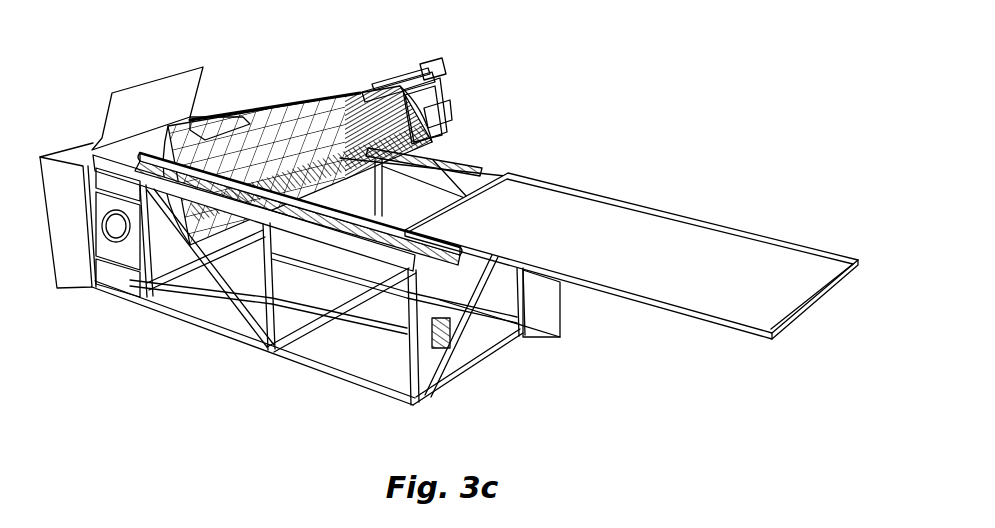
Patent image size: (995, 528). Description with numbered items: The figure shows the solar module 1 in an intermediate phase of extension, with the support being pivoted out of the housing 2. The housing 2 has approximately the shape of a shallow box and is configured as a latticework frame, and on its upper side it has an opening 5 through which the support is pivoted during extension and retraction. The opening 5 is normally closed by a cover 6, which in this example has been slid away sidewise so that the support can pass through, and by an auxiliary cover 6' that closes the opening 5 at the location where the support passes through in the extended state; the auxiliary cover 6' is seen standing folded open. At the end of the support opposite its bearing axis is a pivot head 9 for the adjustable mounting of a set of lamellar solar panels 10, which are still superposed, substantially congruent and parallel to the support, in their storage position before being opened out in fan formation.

The solar module 1 is at (196, 359).
The housing 2 is at (162, 308).
The opening 5 is at (403, 188).
The cover 6 is at (631, 237).
The auxiliary cover 6' is at (171, 85).
The pivot head 9 is at (455, 87).
The solar panels 10 is at (283, 130).